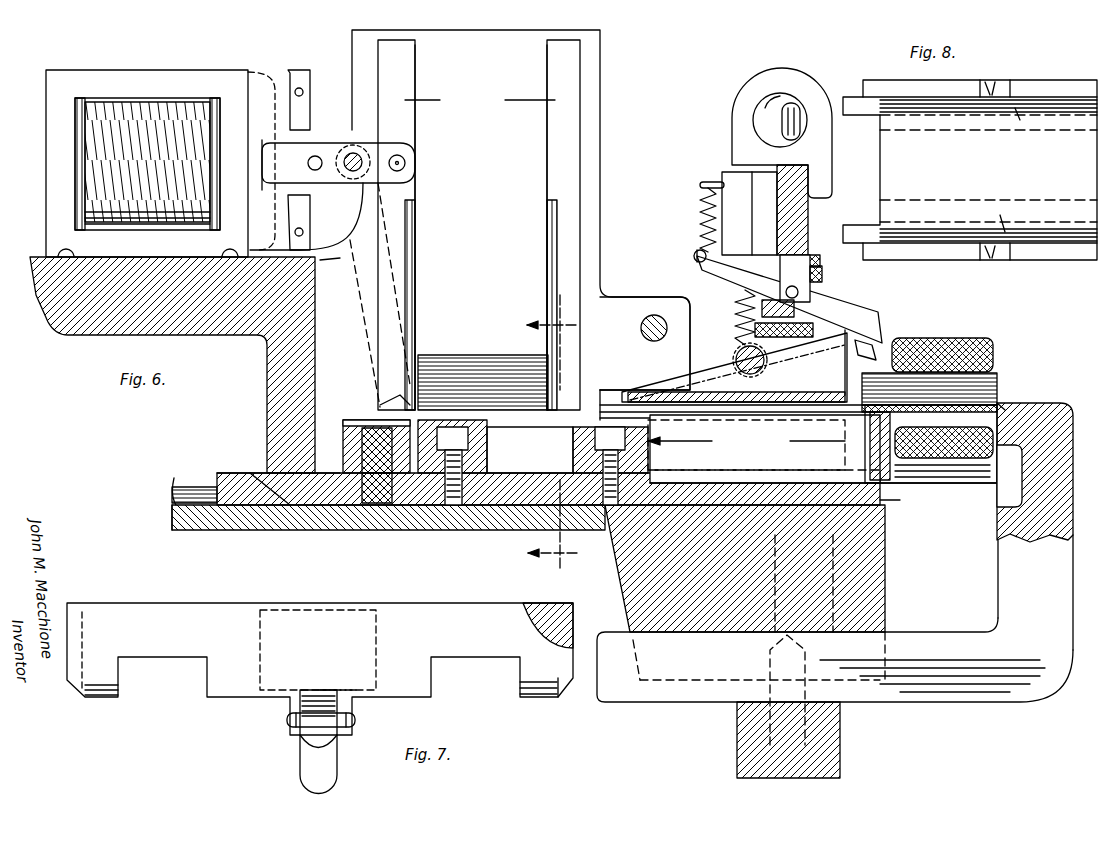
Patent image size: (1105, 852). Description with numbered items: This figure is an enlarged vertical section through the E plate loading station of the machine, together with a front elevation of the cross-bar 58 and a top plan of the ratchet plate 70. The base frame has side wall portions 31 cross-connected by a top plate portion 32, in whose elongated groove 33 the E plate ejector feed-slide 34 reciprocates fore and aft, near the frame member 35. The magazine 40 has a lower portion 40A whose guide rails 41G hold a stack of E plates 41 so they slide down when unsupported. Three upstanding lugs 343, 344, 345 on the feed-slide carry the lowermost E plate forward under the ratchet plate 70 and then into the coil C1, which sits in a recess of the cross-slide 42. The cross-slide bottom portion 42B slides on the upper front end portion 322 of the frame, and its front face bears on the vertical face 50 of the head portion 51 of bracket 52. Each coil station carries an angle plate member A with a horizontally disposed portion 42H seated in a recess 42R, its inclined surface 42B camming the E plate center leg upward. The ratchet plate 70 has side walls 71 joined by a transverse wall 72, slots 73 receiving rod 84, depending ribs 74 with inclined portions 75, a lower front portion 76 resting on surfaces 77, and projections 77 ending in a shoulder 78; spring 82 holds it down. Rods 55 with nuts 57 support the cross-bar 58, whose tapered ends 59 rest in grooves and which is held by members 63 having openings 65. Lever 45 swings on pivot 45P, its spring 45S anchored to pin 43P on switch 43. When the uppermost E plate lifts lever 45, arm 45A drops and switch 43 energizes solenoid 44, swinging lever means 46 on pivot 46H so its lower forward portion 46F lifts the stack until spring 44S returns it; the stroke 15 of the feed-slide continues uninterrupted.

In FIG. 6, the direction of movement arrow 15 is at (534, 432).
In FIG. 6, the side wall portion 31 is at (170, 530).
In FIG. 6, the plate portion 32 is at (372, 510).
In FIG. 6, the elongated groove 33 is at (190, 487).
In FIG. 6, the E plate ejector feed-slide 34 is at (242, 472).
In FIG. 6, the frame member 35 is at (60, 338).
In FIG. 6, the magazine 40 is at (603, 168).
In FIG. 6, the lower portion of magazine 40A is at (478, 86).
In FIG. 6, the E plate 41 is at (448, 355).
In FIG. 6, the guide rail 41G is at (481, 227).
In FIG. 6, the cross-slide 42 is at (920, 370).
In FIG. 6, the inclined surface portion 42B is at (870, 470).
In FIG. 6, the horizontally disposed portion 42H is at (996, 400).
In FIG. 6, the recess 42R is at (765, 492).
In FIG. 6, the electric switch 43 is at (722, 166).
In FIG. 7, the electric switch 43 is at (258, 636).
In FIG. 6, the pin 43P is at (700, 185).
In FIG. 6, the solenoid 44 is at (208, 65).
In FIG. 6, the spring 44S is at (345, 240).
In FIG. 6, the lever 45 is at (835, 322).
In FIG. 7, the lever 45 is at (337, 760).
In FIG. 6, the lever arm 45A is at (720, 276).
In FIG. 6, the horizontal pivot 45P is at (848, 284).
In FIG. 7, the horizontal pivot 45P is at (287, 720).
In FIG. 6, the tension spring 45S is at (702, 210).
In FIG. 6, the lever means 46 is at (395, 284).
In FIG. 6, the lower forward portion 46F is at (405, 535).
In FIG. 6, the horizontal pivot 46H is at (378, 395).
In FIG. 6, the vertical face 50 is at (1003, 412).
In FIG. 6, the head portion 51 is at (1062, 403).
In FIG. 6, the bracket 52 is at (930, 640).
In FIG. 6, the rod 55 is at (800, 108).
In FIG. 6, the thumb actuatable nut 57 is at (816, 255).
In FIG. 6, the cross-bar 58 is at (800, 210).
In FIG. 7, the cross-bar 58 is at (320, 669).
In FIG. 7, the tapered end portion 59 is at (105, 695).
In FIG. 6, the member 63 is at (760, 85).
In FIG. 6, the opening 65 is at (776, 100).
In FIG. 6, the ratchet plate 70 is at (850, 342).
In FIG. 8, the ratchet plate 70 is at (942, 266).
In FIG. 6, the vertical side wall portion 71 is at (835, 352).
In FIG. 8, the vertical side wall portion 71 is at (1047, 80).
In FIG. 6, the transverse wall portion 72 is at (660, 392).
In FIG. 8, the transverse wall portion 72 is at (988, 157).
In FIG. 6, the slot 73 is at (742, 368).
In FIG. 8, the slot 73 is at (985, 98).
In FIG. 6, the rib 74 is at (835, 415).
In FIG. 8, the rib 74 is at (1020, 200).
In FIG. 6, the inclined portion 75 is at (788, 412).
In FIG. 6, the lower front portion 76 is at (846, 435).
In FIG. 6, the downwardly extending projection 77 is at (616, 398).
In FIG. 6, the shoulder portion 78 is at (764, 449).
In FIG. 6, the spring 82 is at (738, 305).
In FIG. 6, the rod 84 is at (738, 352).
In FIG. 6, the upper front end portion 322 is at (880, 500).
In FIG. 6, the lug 343 is at (290, 505).
In FIG. 6, the lug 344 is at (478, 460).
In FIG. 6, the lug 345 is at (610, 470).
In FIG. 6, the angle plate member A is at (985, 470).
In FIG. 6, the coil C1 is at (975, 385).